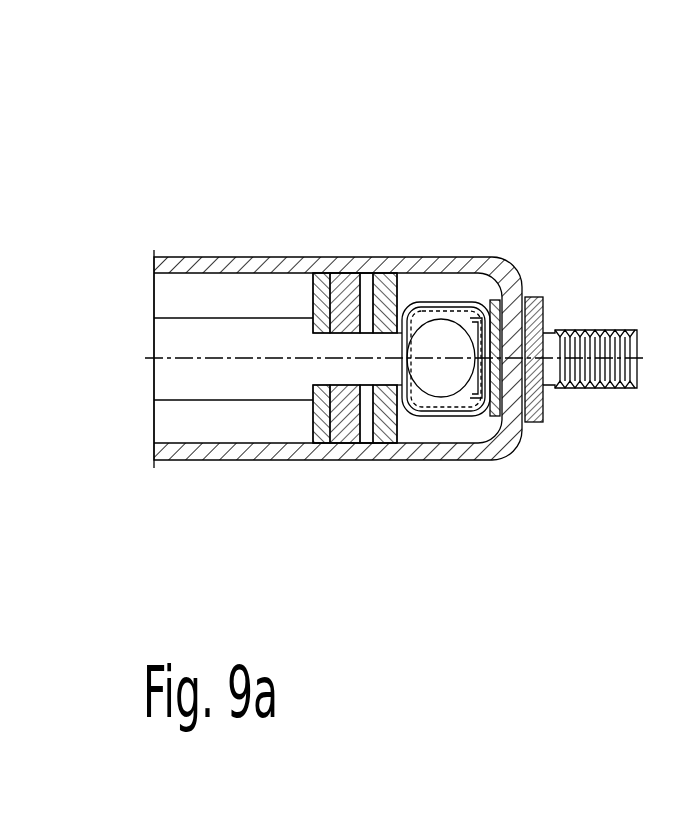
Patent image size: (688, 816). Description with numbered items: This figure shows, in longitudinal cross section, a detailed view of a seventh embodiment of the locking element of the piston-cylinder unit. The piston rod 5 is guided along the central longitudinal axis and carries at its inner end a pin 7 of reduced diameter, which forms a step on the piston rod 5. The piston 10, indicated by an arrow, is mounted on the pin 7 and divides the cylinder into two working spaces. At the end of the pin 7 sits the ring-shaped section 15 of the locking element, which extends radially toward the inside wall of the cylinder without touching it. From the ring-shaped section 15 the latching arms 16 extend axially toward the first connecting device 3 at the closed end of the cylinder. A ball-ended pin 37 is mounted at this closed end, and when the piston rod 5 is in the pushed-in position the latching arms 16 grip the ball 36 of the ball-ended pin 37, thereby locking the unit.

The first connecting device 3 is at (603, 330).
The piston rod 5 is at (227, 380).
The pin 7 is at (359, 350).
The piston 10 is at (333, 471).
The ring-shaped section 15 is at (410, 412).
The latching arms 16 is at (437, 417).
The ball 36 is at (440, 340).
The ball-ended pin 37 is at (493, 290).